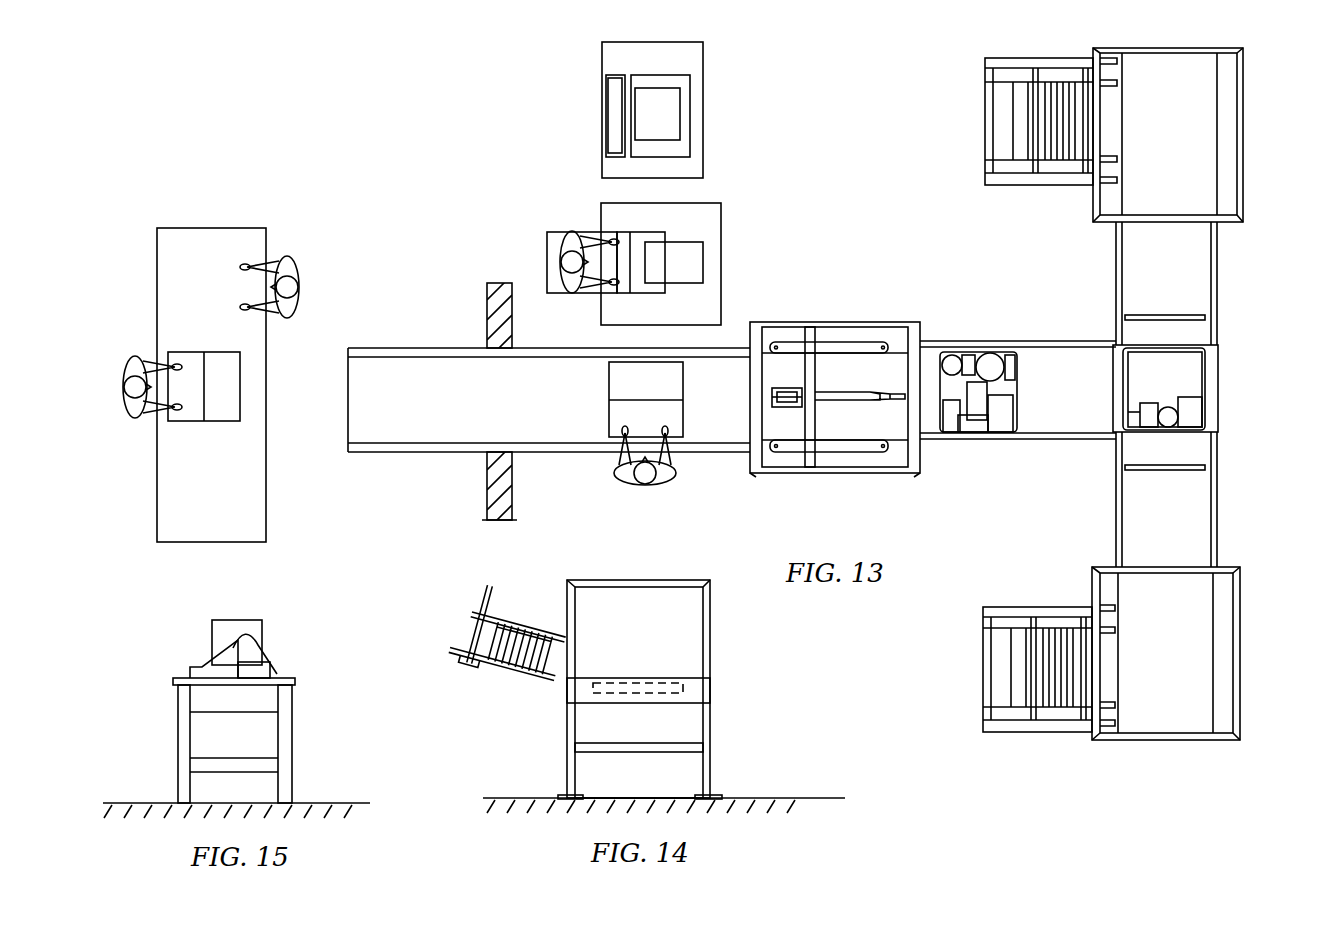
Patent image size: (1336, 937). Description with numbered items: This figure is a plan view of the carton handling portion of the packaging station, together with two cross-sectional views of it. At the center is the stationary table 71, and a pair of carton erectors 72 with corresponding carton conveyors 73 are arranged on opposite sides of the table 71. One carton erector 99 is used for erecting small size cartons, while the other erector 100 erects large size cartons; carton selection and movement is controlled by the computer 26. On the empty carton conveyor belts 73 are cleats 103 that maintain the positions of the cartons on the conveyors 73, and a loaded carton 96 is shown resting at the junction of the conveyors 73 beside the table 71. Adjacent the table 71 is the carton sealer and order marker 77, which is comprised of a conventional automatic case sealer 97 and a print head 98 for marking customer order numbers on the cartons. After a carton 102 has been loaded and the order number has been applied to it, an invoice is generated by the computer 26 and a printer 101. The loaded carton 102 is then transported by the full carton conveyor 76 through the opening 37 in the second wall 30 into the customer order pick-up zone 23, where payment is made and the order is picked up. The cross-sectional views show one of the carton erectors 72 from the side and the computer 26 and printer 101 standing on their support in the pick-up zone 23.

In FIG. 13, the customer order pick-up zone 23 is at (244, 162).
In FIG. 13, the computer 26 is at (690, 108).
In FIG. 15, the computer 26 is at (212, 620).
In FIG. 13, the second wall 30 is at (487, 475).
In FIG. 13, the opening 37 is at (485, 340).
In FIG. 13, the stationary table 71 is at (1218, 410).
In FIG. 13, the carton erectors 72 is at (1098, 222).
In FIG. 14, the carton erectors 72 is at (640, 580).
In FIG. 13, the carton conveyors 73 is at (1203, 265).
In FIG. 13, the full carton conveyor 76 is at (1055, 418).
In FIG. 13, the carton sealer and order marker 77 is at (822, 473).
In FIG. 13, the pallet 96 is at (1203, 383).
In FIG. 13, the automatic case sealer 97 is at (905, 392).
In FIG. 13, the print head 98 is at (772, 392).
In FIG. 13, the carton erector 99 is at (1243, 127).
In FIG. 13, the carton erector 100 is at (1240, 610).
In FIG. 15, the printer 101 is at (190, 667).
In FIG. 13, the carton 102 is at (609, 387).
In FIG. 13, the cleats 103 is at (1140, 315).